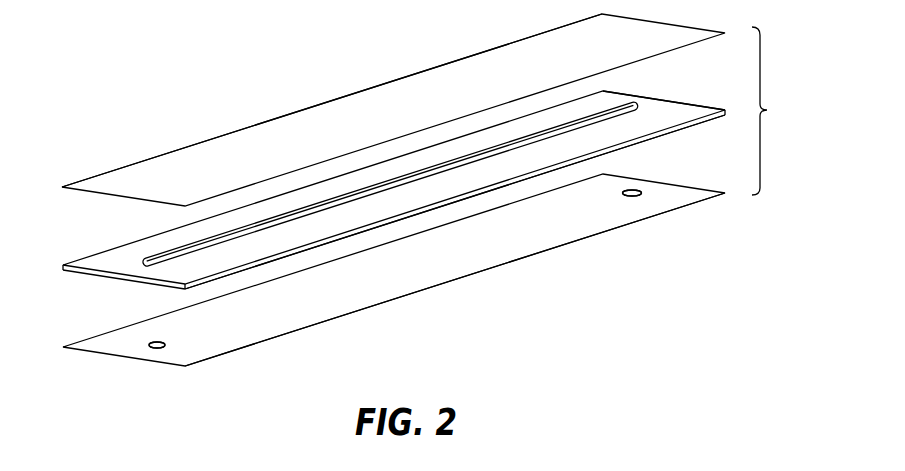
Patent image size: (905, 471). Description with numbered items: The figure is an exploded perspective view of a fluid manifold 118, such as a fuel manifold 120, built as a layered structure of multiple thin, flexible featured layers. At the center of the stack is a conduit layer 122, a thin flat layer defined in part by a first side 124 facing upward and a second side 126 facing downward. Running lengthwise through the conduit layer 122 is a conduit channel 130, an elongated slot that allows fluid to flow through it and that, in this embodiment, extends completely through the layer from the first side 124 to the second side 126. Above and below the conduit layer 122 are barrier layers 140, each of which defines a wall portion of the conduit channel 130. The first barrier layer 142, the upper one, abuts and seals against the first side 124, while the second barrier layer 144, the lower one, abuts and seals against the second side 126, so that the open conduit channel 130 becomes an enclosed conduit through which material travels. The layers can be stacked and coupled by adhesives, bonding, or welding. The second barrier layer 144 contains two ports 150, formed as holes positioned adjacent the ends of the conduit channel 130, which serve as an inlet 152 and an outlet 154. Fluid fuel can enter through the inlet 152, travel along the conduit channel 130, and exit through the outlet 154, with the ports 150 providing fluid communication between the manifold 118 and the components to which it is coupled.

The manifold 118 is at (270, 43).
The fuel manifold 120 is at (776, 111).
The conduit layer 122 is at (695, 110).
The first side 124 is at (657, 108).
The second side 126 is at (672, 132).
The conduit channel 130 is at (190, 250).
The barrier layer 140 is at (213, 143).
The first barrier layer 142 is at (308, 118).
The second barrier layer 144 is at (350, 298).
The ports 150 is at (642, 196).
The inlet 152 is at (631, 191).
The outlet 154 is at (157, 343).